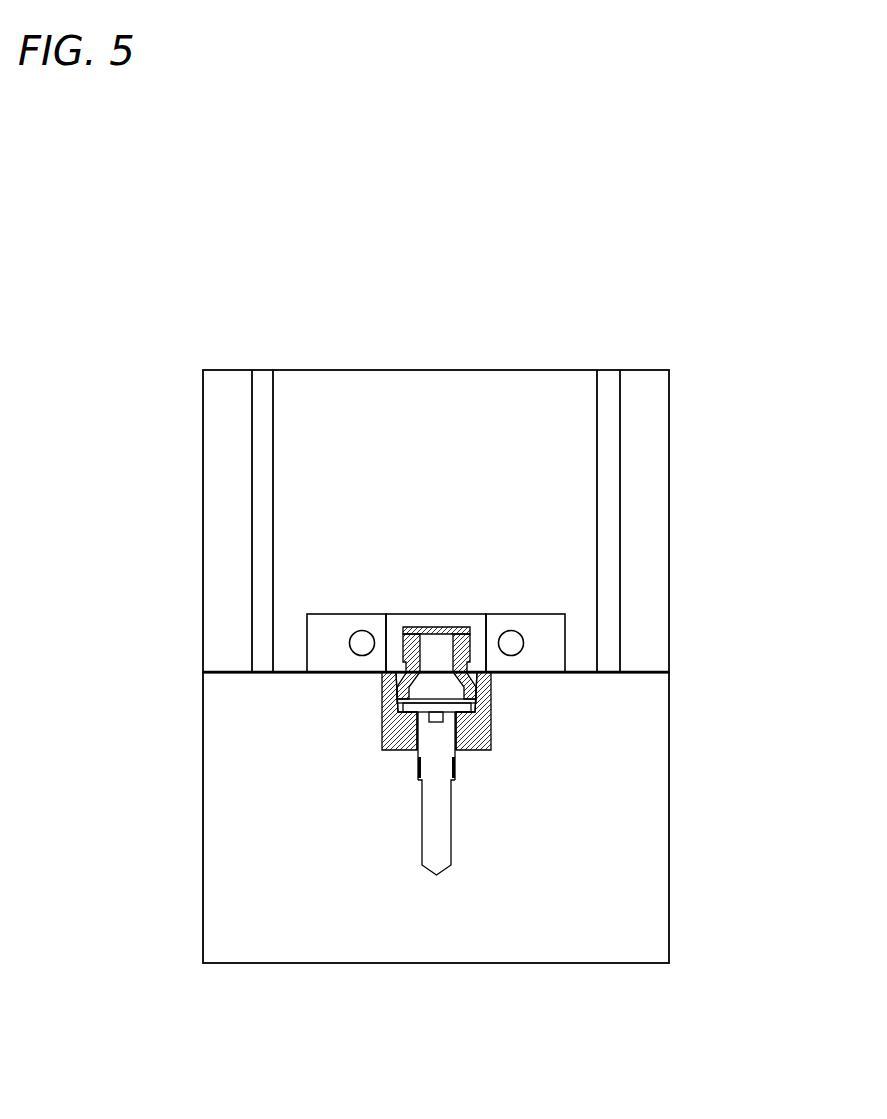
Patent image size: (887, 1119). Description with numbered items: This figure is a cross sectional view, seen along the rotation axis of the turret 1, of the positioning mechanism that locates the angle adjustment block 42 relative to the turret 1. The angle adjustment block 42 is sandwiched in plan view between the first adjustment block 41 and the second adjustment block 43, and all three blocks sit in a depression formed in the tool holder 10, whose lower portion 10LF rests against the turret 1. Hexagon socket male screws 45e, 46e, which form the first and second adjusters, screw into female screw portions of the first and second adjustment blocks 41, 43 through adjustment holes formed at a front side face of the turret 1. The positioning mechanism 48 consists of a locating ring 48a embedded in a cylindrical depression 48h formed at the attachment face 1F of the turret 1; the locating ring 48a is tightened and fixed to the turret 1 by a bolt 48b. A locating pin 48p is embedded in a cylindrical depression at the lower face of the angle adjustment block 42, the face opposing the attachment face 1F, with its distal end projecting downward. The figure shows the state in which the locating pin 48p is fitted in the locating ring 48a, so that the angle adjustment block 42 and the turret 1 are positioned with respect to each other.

The turret 1 is at (668, 829).
The attachment face 1F is at (630, 675).
The tool holder 10 is at (667, 523).
The lower end face of cover member 10LF is at (648, 668).
The first adjustment block 41 is at (337, 613).
The angle adjustment block 42 is at (430, 612).
The second adjustment block 43 is at (530, 613).
The hexagon socket male screw 45e is at (362, 631).
The hexagon socket male screw 46e is at (507, 631).
The connector unit 48 is at (453, 523).
The locating ring 48a is at (490, 702).
The bolt 48b is at (448, 816).
The cylindrical depression 48h is at (490, 745).
The locating pin 48p is at (408, 652).